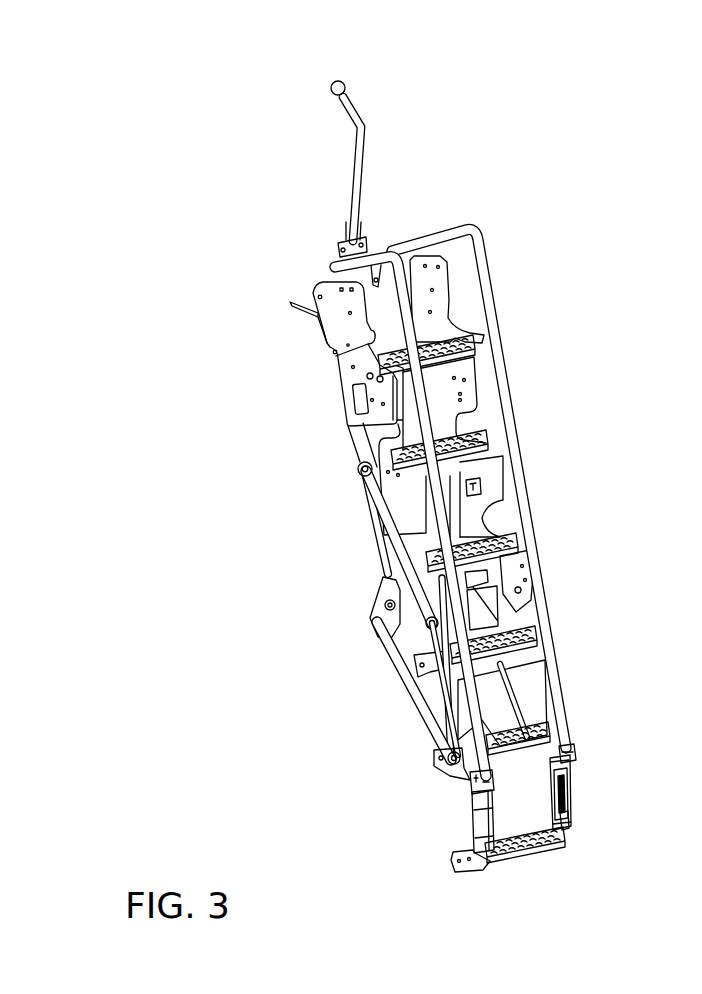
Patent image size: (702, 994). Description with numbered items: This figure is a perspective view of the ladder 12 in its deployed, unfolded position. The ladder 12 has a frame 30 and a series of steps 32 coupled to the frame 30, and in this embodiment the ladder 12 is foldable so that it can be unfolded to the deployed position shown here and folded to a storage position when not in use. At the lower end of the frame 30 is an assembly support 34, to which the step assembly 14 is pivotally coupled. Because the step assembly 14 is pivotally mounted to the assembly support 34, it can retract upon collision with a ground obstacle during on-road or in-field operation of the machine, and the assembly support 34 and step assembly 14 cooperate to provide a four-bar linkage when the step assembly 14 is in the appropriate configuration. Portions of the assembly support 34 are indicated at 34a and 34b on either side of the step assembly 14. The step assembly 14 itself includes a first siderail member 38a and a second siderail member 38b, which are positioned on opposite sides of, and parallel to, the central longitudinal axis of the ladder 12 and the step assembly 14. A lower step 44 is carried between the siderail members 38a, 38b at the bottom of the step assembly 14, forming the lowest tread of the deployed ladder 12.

The ladder 12 is at (289, 66).
The step assembly 14 is at (488, 848).
The frame 30 is at (453, 707).
The steps 32 is at (480, 471).
The assembly support 34 is at (452, 788).
The right rail end bracket 34a is at (573, 741).
The left rail end bracket 34b is at (461, 795).
The first siderail member 38a is at (570, 798).
The second siderail member 38b is at (477, 818).
The bottom step 44 is at (525, 884).